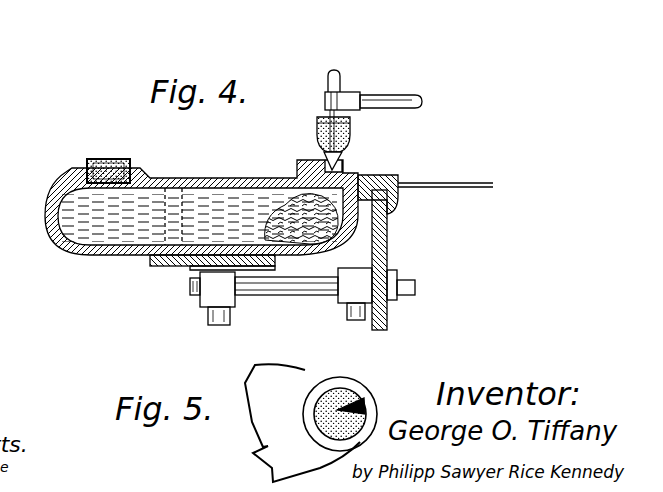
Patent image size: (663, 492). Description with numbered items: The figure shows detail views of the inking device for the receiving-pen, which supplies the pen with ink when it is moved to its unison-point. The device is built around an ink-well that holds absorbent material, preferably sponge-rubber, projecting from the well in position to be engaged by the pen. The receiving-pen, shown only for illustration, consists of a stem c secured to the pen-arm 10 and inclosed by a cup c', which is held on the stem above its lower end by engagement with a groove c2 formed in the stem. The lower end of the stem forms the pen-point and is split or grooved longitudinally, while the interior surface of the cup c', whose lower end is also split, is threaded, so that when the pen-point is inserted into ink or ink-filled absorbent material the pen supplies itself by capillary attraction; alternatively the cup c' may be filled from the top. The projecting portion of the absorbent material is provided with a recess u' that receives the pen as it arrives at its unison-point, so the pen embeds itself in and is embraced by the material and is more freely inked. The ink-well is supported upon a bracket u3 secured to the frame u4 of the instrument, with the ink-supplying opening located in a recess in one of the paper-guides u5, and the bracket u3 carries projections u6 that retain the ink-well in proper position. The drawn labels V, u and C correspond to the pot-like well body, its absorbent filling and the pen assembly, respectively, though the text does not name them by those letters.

In FIG. 4, the melting pot or trough V is at (222, 180).
In FIG. 5, the melting pot or trough V is at (247, 403).
In FIG. 4, the nozzle block u is at (305, 160).
In FIG. 5, the nozzle block u is at (340, 400).
In FIG. 4, the recess u' is at (354, 199).
In FIG. 5, the recess u' is at (368, 385).
In FIG. 4, the bracket u3 is at (184, 266).
In FIG. 4, the frame u4 is at (399, 260).
In FIG. 4, the paper-guide u5 is at (404, 178).
In FIG. 4, the projections u6 is at (160, 233).
In FIG. 4, the valve C is at (330, 111).
In FIG. 4, the stem c is at (321, 75).
In FIG. 4, the cup c' is at (345, 133).
In FIG. 4, the groove c2 is at (342, 155).
In FIG. 4, the pen-arm 10 is at (408, 94).